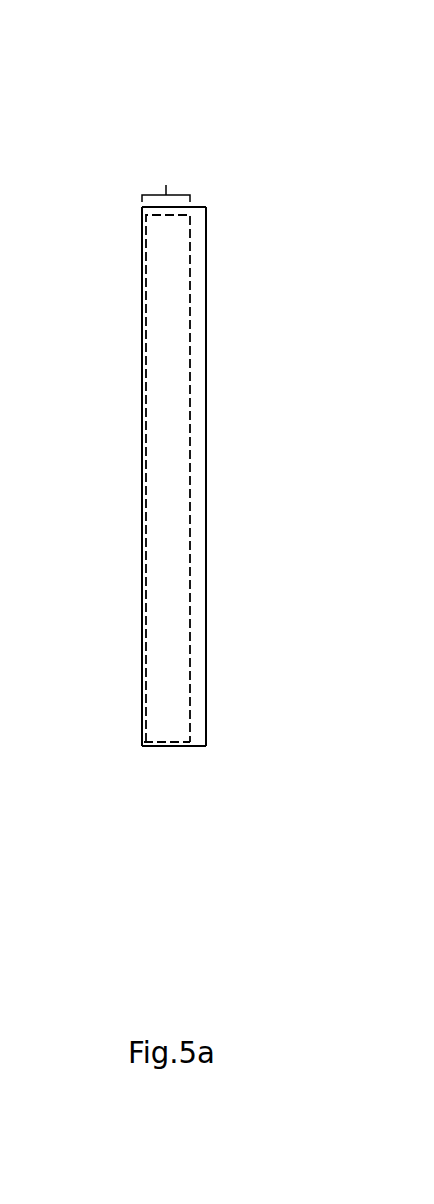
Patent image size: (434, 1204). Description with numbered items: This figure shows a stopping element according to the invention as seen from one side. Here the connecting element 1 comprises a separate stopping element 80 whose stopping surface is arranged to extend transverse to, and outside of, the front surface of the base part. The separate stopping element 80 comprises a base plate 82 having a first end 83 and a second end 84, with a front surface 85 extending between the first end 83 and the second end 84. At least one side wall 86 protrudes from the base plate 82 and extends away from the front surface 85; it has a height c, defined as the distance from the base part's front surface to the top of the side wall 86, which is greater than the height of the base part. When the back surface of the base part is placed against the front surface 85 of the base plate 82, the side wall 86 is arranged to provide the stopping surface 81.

The connecting element 1 is at (175, 145).
The stopping element 80 is at (217, 180).
The stopping surface 81 is at (162, 218).
The base plate 82 is at (203, 345).
The first end 83 is at (206, 207).
The second end 84 is at (206, 747).
The front surface 85 is at (193, 530).
The side wall 86 is at (167, 745).